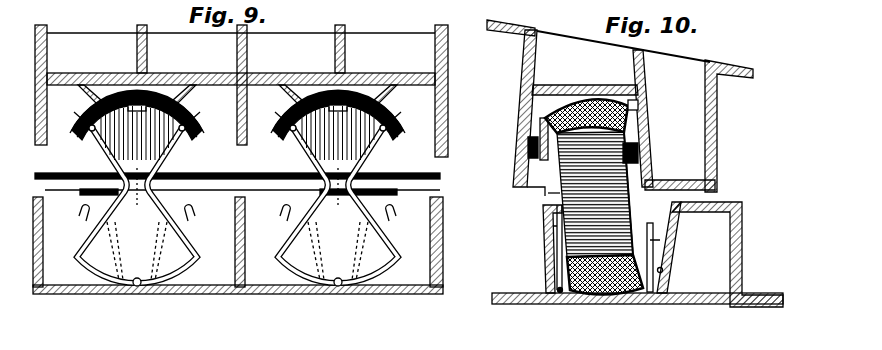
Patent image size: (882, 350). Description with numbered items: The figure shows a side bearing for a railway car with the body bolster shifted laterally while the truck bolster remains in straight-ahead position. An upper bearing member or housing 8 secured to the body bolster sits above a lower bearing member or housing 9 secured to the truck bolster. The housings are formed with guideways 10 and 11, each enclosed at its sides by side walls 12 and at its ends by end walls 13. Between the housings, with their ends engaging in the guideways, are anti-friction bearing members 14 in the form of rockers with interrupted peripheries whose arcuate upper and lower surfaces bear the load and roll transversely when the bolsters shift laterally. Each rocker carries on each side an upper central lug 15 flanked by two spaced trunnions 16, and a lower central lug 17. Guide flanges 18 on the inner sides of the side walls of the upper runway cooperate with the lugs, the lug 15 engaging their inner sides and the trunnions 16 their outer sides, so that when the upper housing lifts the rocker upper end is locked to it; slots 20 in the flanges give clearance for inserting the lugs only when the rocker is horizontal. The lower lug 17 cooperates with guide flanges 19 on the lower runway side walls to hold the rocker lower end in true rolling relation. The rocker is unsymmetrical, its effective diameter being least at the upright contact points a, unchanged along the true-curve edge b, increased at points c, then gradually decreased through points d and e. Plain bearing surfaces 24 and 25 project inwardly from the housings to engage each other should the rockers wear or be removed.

In FIG. 9, the upper bearing member or housing 8 is at (375, 84).
In FIG. 10, the upper bearing member or housing 8 is at (530, 89).
In FIG. 9, the lower bearing member or housing 9 is at (430, 295).
In FIG. 10, the lower bearing member or housing 9 is at (562, 305).
In FIG. 9, the guideway 10 is at (241, 89).
In FIG. 9, the guideway 11 is at (214, 253).
In FIG. 9, the side walls 12 is at (50, 192).
In FIG. 10, the side walls 12 is at (514, 188).
In FIG. 9, the end walls 13 is at (36, 102).
In FIG. 10, the end walls 13 is at (522, 160).
In FIG. 9, the anti-friction bearing members 14 is at (186, 153).
In FIG. 10, the anti-friction bearing members 14 is at (556, 197).
In FIG. 9, the central lug 15 is at (150, 92).
In FIG. 10, the central lug 15 is at (641, 102).
In FIG. 9, the spaced lugs or trunnions 16 is at (85, 133).
In FIG. 10, the spaced lugs or trunnions 16 is at (646, 119).
In FIG. 9, the central lug 17 is at (138, 290).
In FIG. 10, the central lug 17 is at (553, 298).
In FIG. 9, the guide flanges 18 is at (82, 90).
In FIG. 10, the guide flanges 18 is at (655, 182).
In FIG. 9, the guide flanges or guideways 19 is at (84, 214).
In FIG. 10, the guide flanges or guideways 19 is at (548, 231).
In FIG. 9, the slots 20 is at (209, 194).
In FIG. 10, the plain bearing surface 24 is at (720, 191).
In FIG. 10, the plain bearing surface 25 is at (745, 205).
In FIG. 9, the contact points a is at (128, 92).
In FIG. 10, the contact points a is at (586, 97).
In FIG. 9, the contact points b is at (237, 133).
In FIG. 10, the contact points b is at (572, 108).
In FIG. 9, the contact points c is at (140, 96).
In FIG. 10, the contact points c is at (618, 97).
In FIG. 9, the contact points d is at (410, 265).
In FIG. 10, the contact points d is at (650, 131).
In FIG. 9, the contact points e is at (240, 126).
In FIG. 10, the contact points e is at (642, 151).